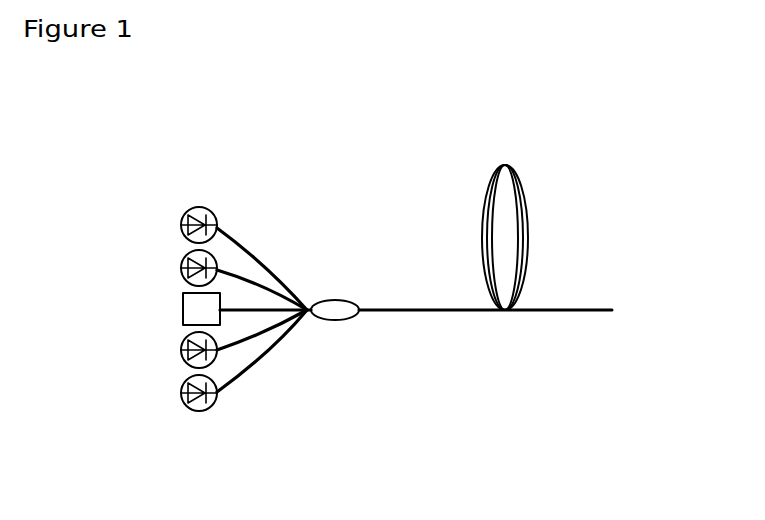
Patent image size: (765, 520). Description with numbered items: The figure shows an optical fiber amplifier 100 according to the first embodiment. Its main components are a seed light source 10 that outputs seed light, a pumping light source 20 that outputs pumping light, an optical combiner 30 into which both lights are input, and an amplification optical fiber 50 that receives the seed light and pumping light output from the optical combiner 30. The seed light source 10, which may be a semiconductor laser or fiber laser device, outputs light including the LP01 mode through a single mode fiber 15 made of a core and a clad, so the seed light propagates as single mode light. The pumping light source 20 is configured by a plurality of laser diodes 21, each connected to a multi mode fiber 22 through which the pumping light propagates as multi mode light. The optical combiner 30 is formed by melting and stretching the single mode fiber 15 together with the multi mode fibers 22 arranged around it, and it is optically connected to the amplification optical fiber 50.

The optical fiber amplifier 100 is at (614, 162).
The seed light source 10 is at (210, 313).
The single mode fiber 15 is at (270, 310).
The pumping light source 20 is at (113, 267).
The laser diode 21 is at (182, 226).
The multi mode fiber 22 is at (226, 230).
The optical combiner 30 is at (340, 310).
The amplification optical fiber 50 is at (527, 310).